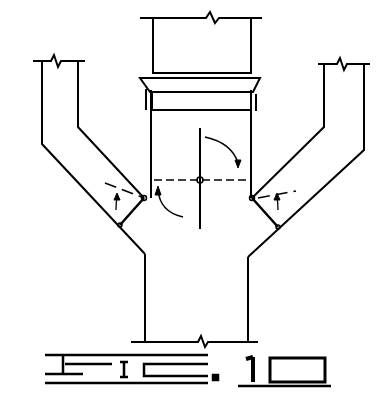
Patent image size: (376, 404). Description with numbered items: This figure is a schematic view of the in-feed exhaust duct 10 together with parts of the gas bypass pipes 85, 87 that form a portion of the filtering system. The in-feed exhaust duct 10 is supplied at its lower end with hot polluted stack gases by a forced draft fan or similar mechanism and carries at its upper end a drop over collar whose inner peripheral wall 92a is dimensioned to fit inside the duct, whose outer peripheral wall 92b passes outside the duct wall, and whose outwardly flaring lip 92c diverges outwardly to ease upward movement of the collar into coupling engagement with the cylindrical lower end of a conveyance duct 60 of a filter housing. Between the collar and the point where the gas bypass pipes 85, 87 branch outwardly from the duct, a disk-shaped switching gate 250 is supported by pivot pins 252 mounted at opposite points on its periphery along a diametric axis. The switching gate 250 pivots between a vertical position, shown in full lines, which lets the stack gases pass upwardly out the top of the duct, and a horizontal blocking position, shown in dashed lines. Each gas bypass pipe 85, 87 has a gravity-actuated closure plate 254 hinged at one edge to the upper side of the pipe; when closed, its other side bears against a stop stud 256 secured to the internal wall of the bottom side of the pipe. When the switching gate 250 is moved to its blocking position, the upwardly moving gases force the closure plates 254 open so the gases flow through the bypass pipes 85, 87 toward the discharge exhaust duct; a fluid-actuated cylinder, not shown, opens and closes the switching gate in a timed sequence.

The in-feed exhaust duct 10 is at (205, 295).
The conveyance duct 60 is at (216, 41).
The gas bypass pipe 85 is at (68, 138).
The gas bypass pipe 87 is at (352, 131).
The inner peripheral wall 92a is at (236, 109).
The outer peripheral wall 92b is at (257, 101).
The outwardly flaring lip 92c is at (141, 79).
The switching gate 250 is at (200, 138).
The pivot pin 252 is at (203, 183).
The gravity-actuated closure plate 254 is at (133, 208).
The stop stud 256 is at (127, 231).